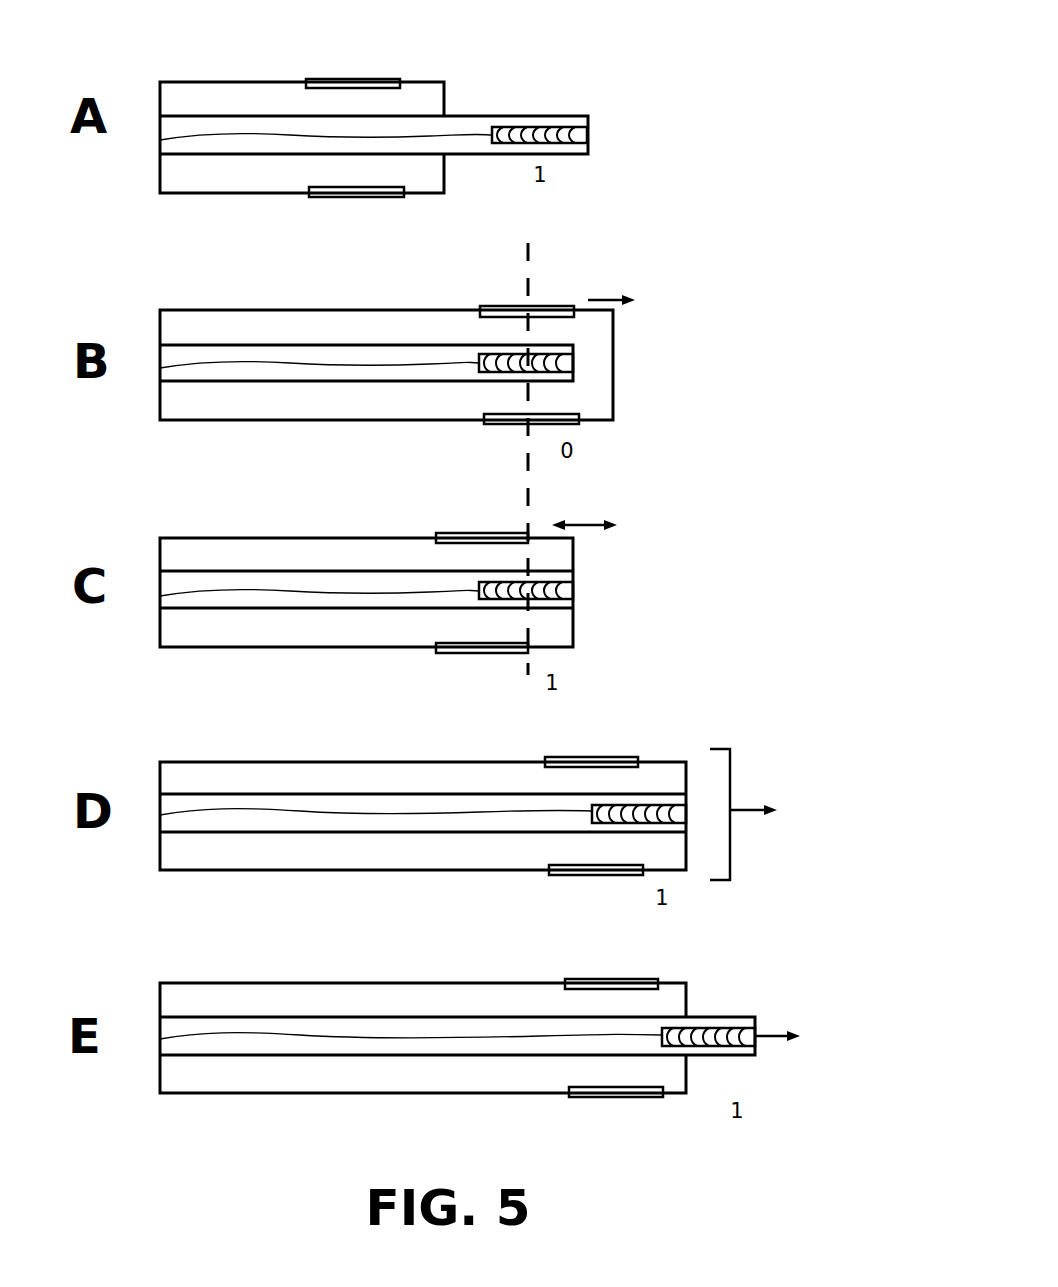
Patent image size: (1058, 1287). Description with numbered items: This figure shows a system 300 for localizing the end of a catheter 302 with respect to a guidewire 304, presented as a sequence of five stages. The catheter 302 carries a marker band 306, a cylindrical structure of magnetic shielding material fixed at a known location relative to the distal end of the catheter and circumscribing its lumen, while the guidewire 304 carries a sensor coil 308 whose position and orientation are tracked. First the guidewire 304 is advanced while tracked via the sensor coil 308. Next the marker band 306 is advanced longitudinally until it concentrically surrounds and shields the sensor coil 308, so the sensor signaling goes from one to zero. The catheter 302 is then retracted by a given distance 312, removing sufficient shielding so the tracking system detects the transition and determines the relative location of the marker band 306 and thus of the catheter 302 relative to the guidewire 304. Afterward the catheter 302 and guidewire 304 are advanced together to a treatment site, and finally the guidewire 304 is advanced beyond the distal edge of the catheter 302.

The system 300 is at (690, 40).
The catheter 302 is at (178, 82).
The guidewire 304 is at (457, 116).
The marker band 306 is at (373, 79).
The sensor coil 308 is at (573, 127).
The distance 312 is at (580, 523).